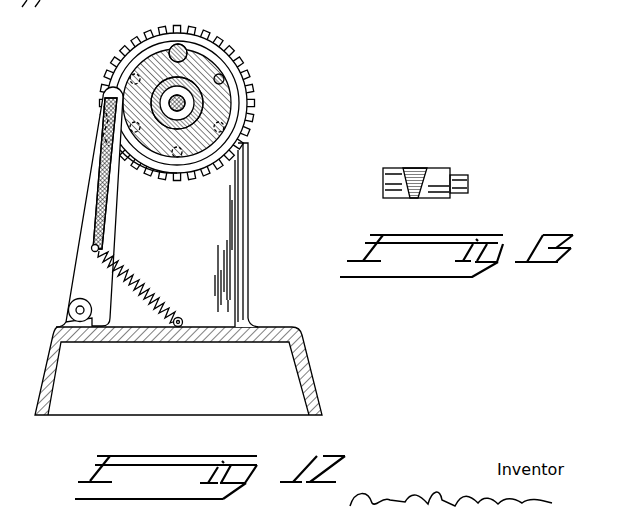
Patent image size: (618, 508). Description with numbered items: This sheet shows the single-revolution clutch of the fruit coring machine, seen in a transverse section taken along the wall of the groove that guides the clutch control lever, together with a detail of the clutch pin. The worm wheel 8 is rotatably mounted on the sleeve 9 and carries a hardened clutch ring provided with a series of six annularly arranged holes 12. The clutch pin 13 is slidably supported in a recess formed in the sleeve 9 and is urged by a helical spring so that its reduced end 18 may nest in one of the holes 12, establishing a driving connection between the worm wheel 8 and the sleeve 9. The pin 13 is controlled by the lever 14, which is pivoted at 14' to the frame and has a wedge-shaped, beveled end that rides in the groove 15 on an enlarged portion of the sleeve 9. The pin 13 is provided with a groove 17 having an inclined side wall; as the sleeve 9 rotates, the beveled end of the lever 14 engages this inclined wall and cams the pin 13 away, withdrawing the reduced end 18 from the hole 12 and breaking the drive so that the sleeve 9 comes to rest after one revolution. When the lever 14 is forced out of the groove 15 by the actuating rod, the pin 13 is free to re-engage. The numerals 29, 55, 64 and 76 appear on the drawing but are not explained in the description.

In FIG. 12, the worm wheel 8 is at (245, 83).
In FIG. 12, the sleeve 9 is at (202, 72).
In FIG. 12, the holes 12 is at (228, 125).
In FIG. 12, the clutch pin 13 is at (182, 52).
In FIG. 13, the clutch pin 13 is at (437, 178).
In FIG. 12, the lever 14 is at (76, 207).
In FIG. 12, the pivot 14' is at (54, 306).
In FIG. 12, the groove 15 is at (233, 146).
In FIG. 13, the groove 17 is at (412, 169).
In FIG. 13, the reduced end 18 is at (470, 181).
In FIG. 12, the pin 29 is at (222, 77).
In FIG. 12, the blade 55 is at (231, 256).
In FIG. 12, the pawl strip 64 is at (140, 78).
In FIG. 12, the gear rim 76 is at (135, 168).